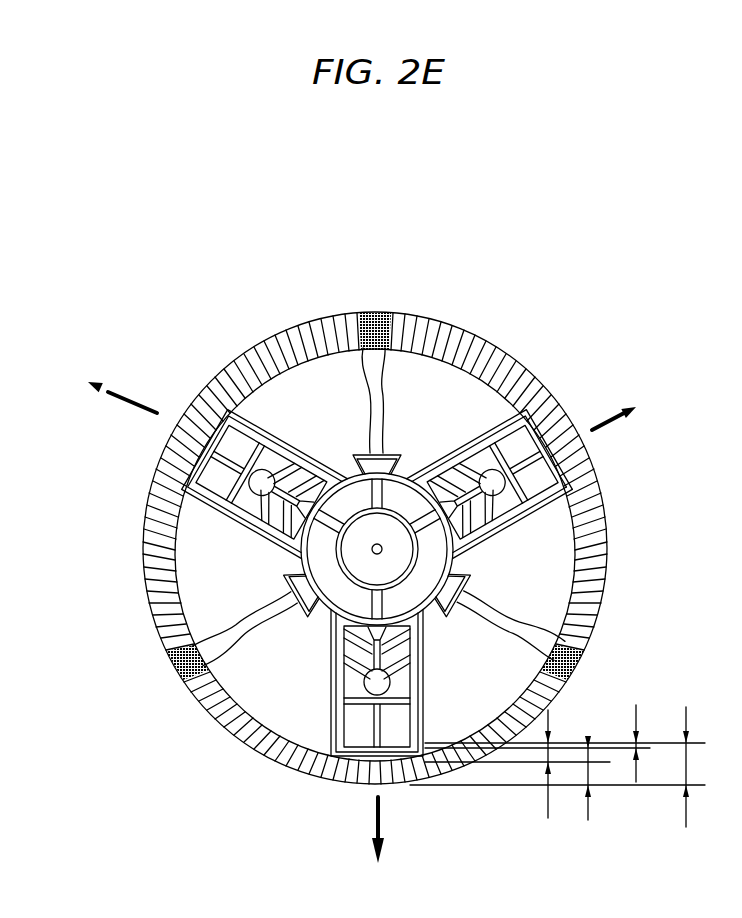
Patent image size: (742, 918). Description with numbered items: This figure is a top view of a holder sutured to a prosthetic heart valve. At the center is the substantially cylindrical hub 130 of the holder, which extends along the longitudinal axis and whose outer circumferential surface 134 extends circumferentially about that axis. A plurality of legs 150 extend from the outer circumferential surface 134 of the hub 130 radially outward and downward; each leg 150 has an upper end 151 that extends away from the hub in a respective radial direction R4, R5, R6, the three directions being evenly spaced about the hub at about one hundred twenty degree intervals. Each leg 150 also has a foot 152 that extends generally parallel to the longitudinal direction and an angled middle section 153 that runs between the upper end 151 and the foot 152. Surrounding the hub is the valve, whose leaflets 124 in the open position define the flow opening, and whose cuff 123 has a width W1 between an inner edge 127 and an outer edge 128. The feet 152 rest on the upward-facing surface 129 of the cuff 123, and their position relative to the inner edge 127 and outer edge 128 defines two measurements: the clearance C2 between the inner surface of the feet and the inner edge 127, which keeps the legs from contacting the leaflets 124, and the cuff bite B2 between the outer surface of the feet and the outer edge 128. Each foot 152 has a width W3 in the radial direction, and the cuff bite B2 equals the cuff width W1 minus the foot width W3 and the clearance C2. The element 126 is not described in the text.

The cuff 123 is at (409, 548).
The leaflets 124 is at (448, 388).
The web spoke 126 is at (380, 312).
The inner edge 127 is at (550, 690).
The outer edge 128 is at (398, 783).
The upward-facing surface 129 is at (587, 575).
The hub 130 is at (409, 468).
The outer circumferential surface 134 is at (330, 483).
The legs 150 is at (537, 450).
The upper end 151 is at (467, 552).
The foot 152 is at (557, 398).
The angled middle section 153 is at (518, 520).
The radial direction R4 is at (376, 823).
The radial direction R5 is at (140, 403).
The radial direction R6 is at (600, 426).
The width of the cuff W1 is at (686, 767).
The width of the foot W3 is at (550, 755).
The cuff bite B2 is at (592, 773).
The clearance C2 is at (638, 748).